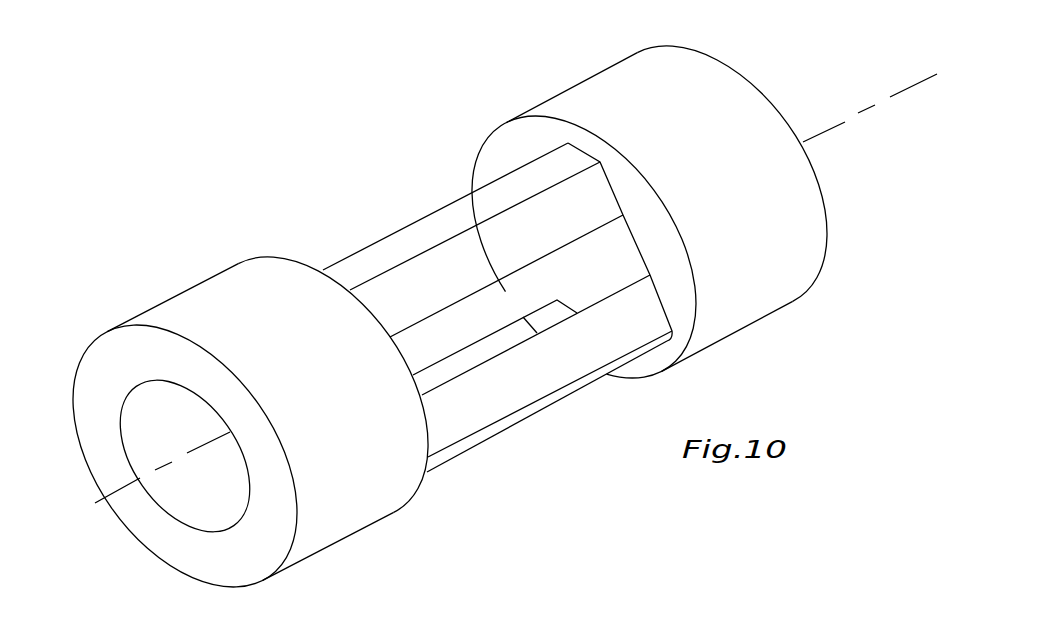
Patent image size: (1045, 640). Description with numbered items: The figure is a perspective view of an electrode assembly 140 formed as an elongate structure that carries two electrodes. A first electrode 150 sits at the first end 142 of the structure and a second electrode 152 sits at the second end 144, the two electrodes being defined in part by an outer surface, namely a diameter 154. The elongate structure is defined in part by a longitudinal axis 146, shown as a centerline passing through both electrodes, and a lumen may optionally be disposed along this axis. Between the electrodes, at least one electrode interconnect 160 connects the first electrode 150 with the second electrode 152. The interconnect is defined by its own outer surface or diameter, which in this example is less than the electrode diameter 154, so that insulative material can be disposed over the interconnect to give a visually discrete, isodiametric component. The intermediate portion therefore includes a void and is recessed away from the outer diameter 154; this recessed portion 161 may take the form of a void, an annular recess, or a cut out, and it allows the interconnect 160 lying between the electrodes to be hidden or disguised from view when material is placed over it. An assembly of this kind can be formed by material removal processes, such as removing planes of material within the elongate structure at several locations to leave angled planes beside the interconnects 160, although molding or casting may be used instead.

The electrode assembly 140 is at (178, 104).
The first end 142 is at (750, 82).
The second end 144 is at (90, 470).
The longitudinal axis 146 is at (192, 453).
The first electrode 150 is at (656, 46).
The second electrode 152 is at (85, 351).
The diameter 154 is at (750, 325).
The electrode interconnect 160 is at (433, 220).
The recessed portion 161 is at (590, 145).